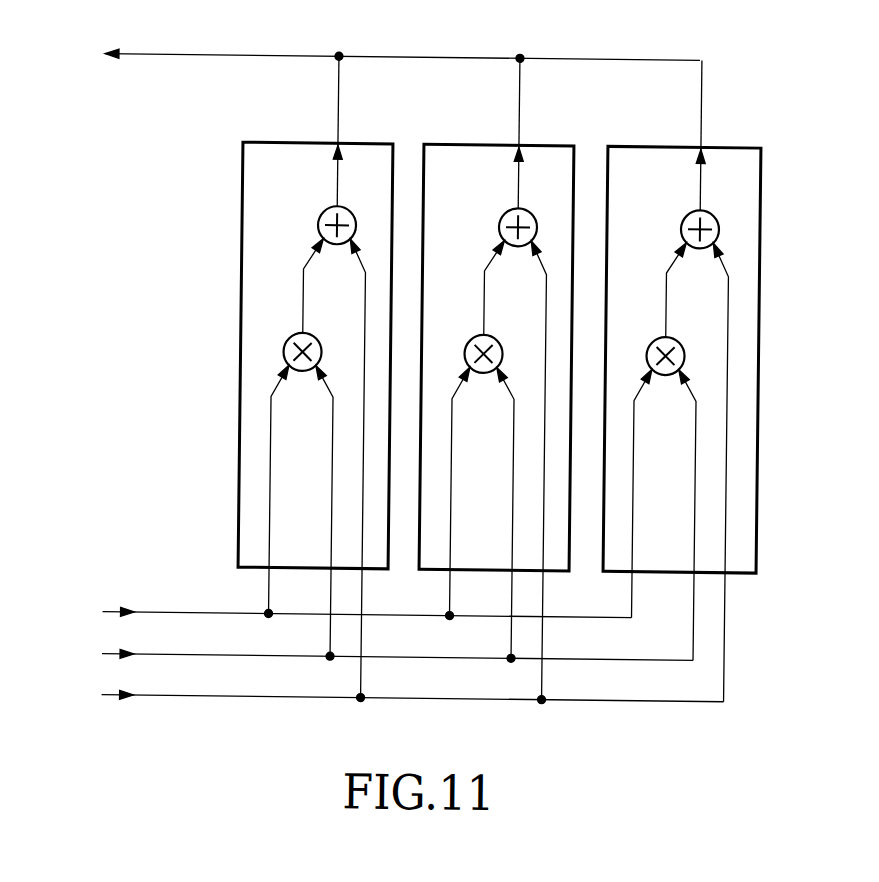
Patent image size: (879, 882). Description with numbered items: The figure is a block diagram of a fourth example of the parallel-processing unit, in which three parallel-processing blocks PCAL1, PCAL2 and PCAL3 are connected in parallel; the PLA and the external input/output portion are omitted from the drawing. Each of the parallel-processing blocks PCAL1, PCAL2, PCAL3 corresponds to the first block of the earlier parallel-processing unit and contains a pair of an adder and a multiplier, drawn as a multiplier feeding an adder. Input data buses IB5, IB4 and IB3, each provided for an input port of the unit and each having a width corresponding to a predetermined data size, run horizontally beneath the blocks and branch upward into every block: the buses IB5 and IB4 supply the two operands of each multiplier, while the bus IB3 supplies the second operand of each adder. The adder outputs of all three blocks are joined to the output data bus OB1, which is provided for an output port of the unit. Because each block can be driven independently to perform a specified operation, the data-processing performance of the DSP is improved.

The output data bus OB1 is at (376, 55).
The input data bus IB5 is at (341, 615).
The input data bus IB4 is at (372, 657).
The input data bus IB3 is at (387, 698).
The parallel-processing block PCAL1 is at (255, 143).
The parallel-processing block PCAL2 is at (451, 144).
The parallel-processing block PCAL3 is at (629, 144).